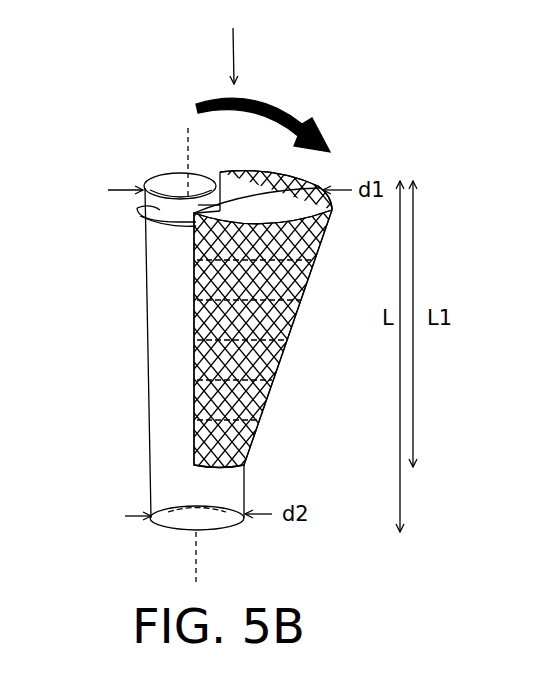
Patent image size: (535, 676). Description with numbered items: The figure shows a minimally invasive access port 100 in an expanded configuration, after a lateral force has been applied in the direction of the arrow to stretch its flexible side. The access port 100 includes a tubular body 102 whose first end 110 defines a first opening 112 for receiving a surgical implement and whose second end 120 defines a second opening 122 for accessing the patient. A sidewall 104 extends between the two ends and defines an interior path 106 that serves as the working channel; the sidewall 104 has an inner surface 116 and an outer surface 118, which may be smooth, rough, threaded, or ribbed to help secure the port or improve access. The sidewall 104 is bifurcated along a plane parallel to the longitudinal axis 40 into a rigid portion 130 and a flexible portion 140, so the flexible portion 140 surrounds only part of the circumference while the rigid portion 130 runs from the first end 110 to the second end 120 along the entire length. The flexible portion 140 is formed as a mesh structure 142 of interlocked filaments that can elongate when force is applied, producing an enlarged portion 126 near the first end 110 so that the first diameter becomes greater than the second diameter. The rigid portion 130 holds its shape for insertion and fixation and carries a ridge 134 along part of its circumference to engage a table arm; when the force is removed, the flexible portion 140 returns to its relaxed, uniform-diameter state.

The longitudinal axis 40 is at (197, 553).
The access port 100 is at (86, 161).
The tubular body 102 is at (108, 362).
The sidewall 104 is at (143, 290).
The interior path 106 is at (263, 79).
The first end 110 is at (183, 170).
The first opening 112 is at (163, 180).
The inner surface 116 is at (190, 194).
The outer surface 118 is at (185, 485).
The second end 120 is at (195, 528).
The second opening 122 is at (228, 522).
The enlarged portion 126 is at (312, 262).
The rigid portion 130 is at (165, 455).
The ridge 134 is at (148, 224).
The flexible portion 140 is at (253, 343).
The mesh structure 142 is at (248, 412).